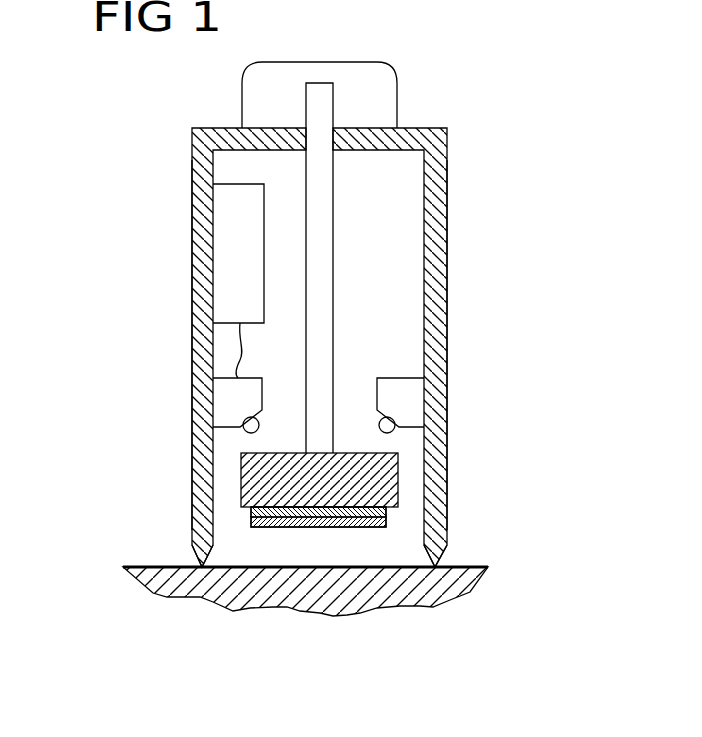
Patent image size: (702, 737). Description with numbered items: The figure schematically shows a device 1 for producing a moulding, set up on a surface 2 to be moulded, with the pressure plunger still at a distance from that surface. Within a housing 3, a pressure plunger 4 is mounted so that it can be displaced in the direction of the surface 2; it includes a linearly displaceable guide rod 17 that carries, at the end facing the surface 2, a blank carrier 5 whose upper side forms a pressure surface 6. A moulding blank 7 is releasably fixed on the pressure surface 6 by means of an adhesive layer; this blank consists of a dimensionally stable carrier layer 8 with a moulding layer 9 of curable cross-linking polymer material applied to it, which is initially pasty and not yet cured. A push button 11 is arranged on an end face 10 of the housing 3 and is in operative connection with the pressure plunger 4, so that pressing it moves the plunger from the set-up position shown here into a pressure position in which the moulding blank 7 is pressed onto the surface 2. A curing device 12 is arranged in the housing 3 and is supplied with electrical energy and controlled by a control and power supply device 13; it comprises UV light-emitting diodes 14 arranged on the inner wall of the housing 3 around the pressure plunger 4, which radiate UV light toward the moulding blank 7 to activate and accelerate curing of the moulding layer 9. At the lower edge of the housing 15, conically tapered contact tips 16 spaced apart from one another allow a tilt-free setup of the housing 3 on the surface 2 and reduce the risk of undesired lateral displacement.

The device 1 is at (509, 138).
The surface 2 is at (142, 559).
The housing 3 is at (203, 268).
The pressure plunger 4 is at (362, 383).
The blank carrier 5 is at (396, 470).
The pressure surface 6 is at (237, 511).
The moulding blank 7 is at (317, 551).
The carrier layer 8 is at (380, 507).
The moulding layer 9 is at (388, 522).
The end face 10 is at (425, 106).
The push button 11 is at (338, 62).
The curing device 12 is at (168, 340).
The control and power supply device 13 is at (225, 216).
The UV light-emitting diodes 14 is at (243, 426).
The lower edge of the housing 15 is at (181, 538).
The contact tips 16 is at (435, 550).
The guide rod 17 is at (315, 189).